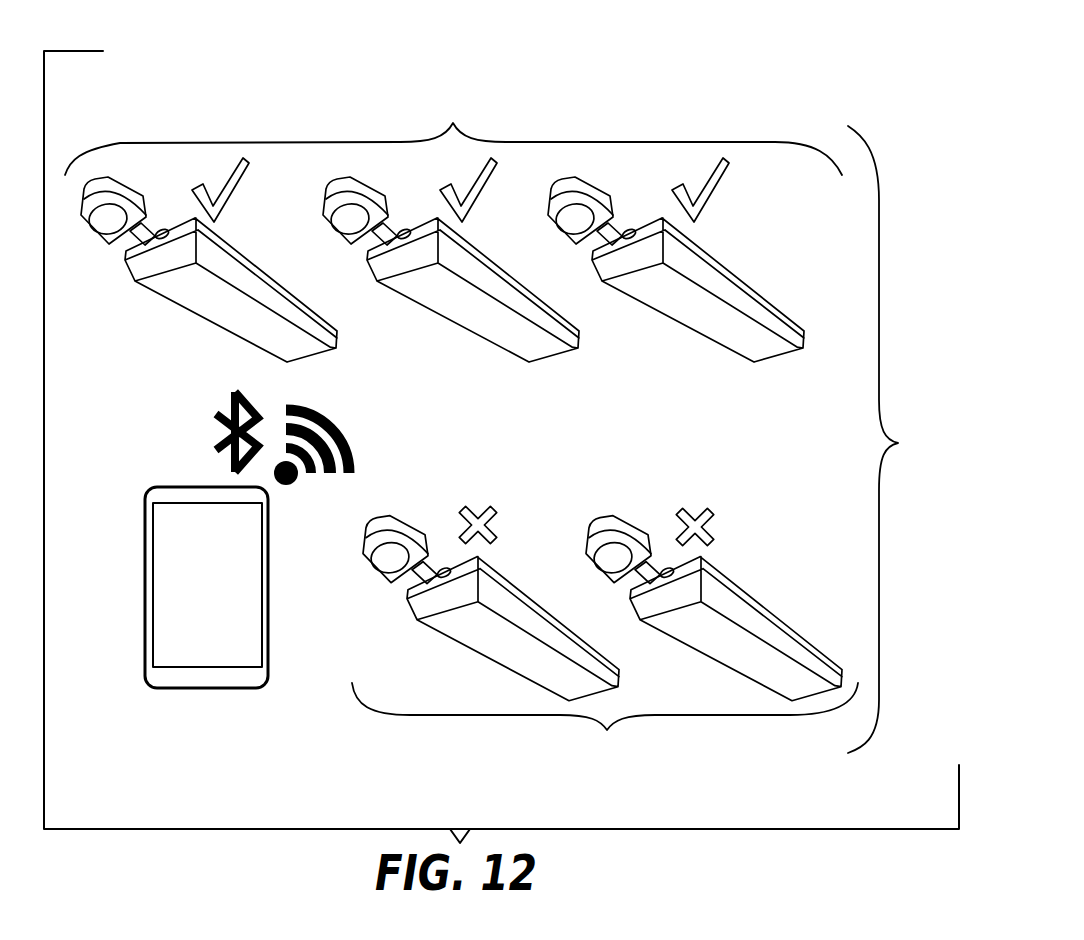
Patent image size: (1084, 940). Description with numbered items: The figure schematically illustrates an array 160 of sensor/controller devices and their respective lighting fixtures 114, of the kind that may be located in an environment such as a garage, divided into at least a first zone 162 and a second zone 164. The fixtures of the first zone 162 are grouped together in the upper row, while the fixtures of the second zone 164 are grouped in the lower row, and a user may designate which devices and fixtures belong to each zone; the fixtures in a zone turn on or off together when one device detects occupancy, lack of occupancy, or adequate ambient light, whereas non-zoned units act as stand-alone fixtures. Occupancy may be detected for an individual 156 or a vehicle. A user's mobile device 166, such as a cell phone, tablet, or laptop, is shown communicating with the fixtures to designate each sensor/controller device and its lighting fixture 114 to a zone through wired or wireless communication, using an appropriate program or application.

The lighting fixture 114 is at (208, 303).
The individual 156 is at (98, 221).
The array 160 is at (898, 443).
The first zone 162 is at (453, 123).
The second zone 164 is at (607, 730).
The mobile device 166 is at (145, 607).